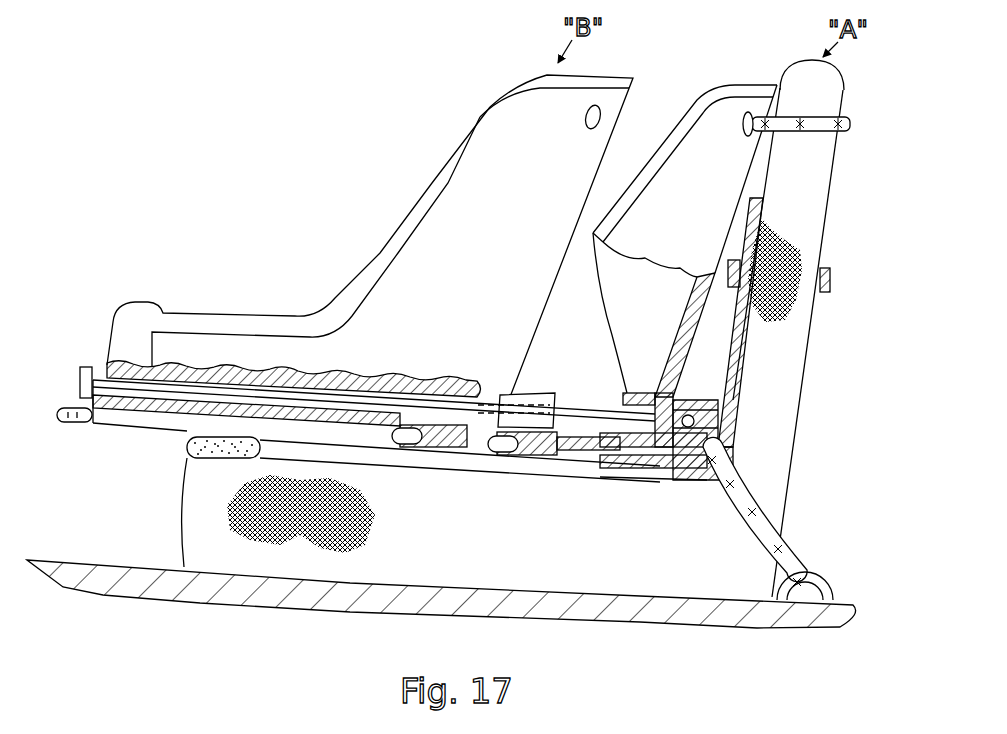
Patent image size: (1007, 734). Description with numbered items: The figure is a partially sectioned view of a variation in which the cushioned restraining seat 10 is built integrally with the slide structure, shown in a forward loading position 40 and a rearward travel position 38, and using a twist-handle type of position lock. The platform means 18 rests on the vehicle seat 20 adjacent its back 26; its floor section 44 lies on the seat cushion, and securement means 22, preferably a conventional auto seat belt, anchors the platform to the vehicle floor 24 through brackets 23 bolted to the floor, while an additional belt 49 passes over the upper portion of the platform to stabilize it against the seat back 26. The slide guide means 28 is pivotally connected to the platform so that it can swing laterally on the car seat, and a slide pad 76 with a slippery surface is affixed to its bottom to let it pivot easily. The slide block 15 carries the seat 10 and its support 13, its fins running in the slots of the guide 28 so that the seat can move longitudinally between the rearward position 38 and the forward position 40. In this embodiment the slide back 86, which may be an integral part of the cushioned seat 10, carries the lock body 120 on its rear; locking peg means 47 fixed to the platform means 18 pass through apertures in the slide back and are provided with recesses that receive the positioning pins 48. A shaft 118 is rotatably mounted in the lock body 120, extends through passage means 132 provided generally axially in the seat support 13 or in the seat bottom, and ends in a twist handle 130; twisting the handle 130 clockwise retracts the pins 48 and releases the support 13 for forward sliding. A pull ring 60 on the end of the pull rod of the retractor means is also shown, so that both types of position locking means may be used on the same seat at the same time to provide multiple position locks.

The restraining seat 10 is at (380, 253).
The forward position 40 is at (452, 139).
The rearward position 38 is at (663, 108).
The seat back 26 is at (817, 174).
The additional belt 49 is at (850, 120).
The slide back 86 is at (685, 318).
The lock body 120 is at (533, 393).
The seat support 13 is at (633, 392).
The locking peg means 47 is at (722, 392).
The positioning pin 48 is at (695, 423).
The floor section 44 is at (643, 478).
The securement means 22 is at (768, 518).
The bracket 23 is at (813, 577).
The floor 24 is at (137, 565).
The vehicle seat 20 is at (520, 545).
The slide pad 76 is at (187, 460).
The slide guide means 28 is at (155, 435).
The pull ring 60 is at (83, 422).
The twist handle 130 is at (80, 383).
The shaft 118 is at (180, 383).
The passage means 132 is at (345, 410).
The slide block 15 is at (445, 453).
The platform means 18 is at (597, 481).